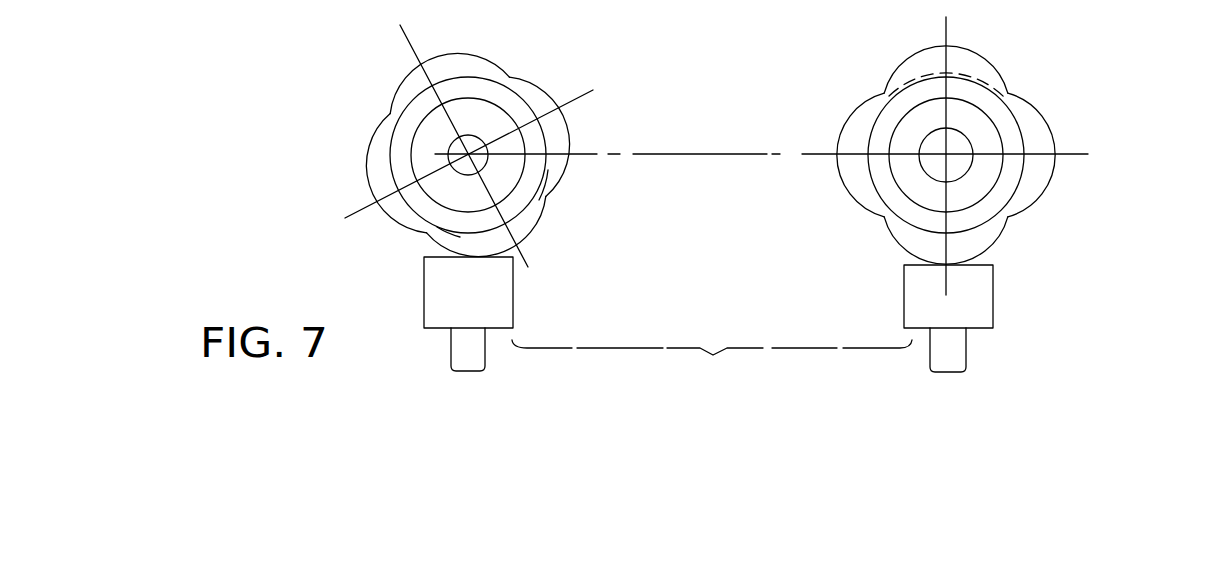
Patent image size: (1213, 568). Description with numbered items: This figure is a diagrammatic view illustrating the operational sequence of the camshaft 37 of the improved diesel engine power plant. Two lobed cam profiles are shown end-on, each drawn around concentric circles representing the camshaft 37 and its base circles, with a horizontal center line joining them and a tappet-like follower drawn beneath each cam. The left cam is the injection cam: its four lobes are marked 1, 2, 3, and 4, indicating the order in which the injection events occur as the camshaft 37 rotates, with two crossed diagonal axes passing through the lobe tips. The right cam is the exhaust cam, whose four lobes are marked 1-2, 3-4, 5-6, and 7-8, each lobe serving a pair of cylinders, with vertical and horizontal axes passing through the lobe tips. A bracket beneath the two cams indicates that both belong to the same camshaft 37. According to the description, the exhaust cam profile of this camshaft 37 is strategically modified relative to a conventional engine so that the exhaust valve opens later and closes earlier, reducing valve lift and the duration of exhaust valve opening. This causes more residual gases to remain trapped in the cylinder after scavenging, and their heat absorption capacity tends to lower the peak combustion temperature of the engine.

The first injection cam lobe (1 INJ) 1 is at (363, 208).
The second injection cam lobe (2 INJ) 2 is at (527, 254).
The third injection cam lobe (3 INJ) 3 is at (413, 50).
The fourth injection cam lobe (4 INJ) 4 is at (573, 100).
The exhaust cam lobe for cylinders 1-2 (1-2 EXH) 1-2 is at (946, 22).
The exhaust cam lobe for cylinders 3-4 (3-4 EXH) 3-4 is at (832, 153).
The exhaust cam lobe for cylinders 5-6 (5-6 EXH) 5-6 is at (1058, 157).
The exhaust cam lobe for cylinders 7-8 (7-8 EXH) 7-8 is at (950, 278).
The camshaft 37 is at (551, 199).